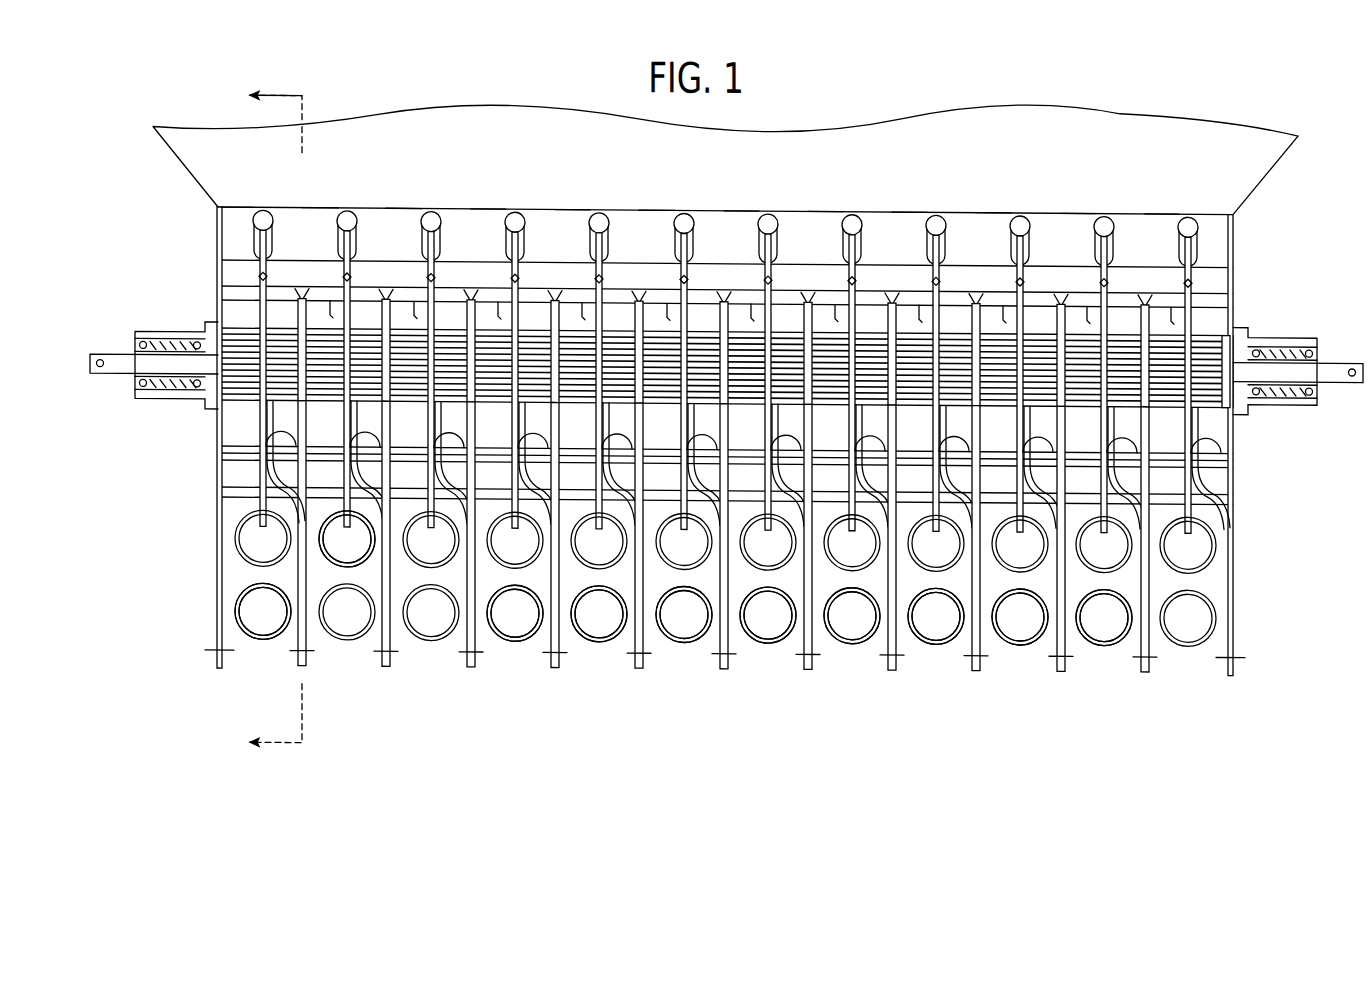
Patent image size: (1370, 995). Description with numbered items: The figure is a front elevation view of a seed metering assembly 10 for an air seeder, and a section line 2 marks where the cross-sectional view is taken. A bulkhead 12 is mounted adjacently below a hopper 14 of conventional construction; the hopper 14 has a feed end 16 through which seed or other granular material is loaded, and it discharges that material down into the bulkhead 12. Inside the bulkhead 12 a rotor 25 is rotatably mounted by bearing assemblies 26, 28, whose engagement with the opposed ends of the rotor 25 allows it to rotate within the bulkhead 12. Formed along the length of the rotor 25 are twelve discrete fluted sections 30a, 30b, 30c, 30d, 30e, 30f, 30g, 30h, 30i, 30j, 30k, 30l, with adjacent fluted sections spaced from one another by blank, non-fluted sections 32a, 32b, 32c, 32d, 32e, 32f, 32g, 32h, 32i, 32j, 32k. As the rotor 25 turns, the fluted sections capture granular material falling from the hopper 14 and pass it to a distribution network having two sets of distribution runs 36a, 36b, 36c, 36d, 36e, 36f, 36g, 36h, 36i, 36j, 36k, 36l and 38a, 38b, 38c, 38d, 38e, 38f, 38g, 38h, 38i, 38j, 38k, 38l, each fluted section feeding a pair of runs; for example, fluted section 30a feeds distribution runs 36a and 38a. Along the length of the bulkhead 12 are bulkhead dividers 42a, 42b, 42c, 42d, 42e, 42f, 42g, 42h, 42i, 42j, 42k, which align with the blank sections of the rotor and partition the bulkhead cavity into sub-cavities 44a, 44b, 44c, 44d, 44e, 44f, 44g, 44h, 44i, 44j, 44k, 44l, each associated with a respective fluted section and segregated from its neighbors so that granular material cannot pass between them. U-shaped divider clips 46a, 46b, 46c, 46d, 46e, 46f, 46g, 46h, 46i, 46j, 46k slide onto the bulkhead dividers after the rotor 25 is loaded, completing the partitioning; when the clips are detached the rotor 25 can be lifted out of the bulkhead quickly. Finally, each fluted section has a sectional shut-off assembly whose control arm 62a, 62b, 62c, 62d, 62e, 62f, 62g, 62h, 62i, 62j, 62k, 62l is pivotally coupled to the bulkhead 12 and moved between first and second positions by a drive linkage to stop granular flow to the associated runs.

The section line 2- 2 is at (264, 420).
The seed metering assembly 10 is at (128, 604).
The bulkhead 12 is at (710, 440).
The hopper 14 is at (1268, 170).
The feed end 16 is at (977, 91).
The rotor 25 is at (1226, 346).
The bearing assembly 26 is at (130, 324).
The bearing assembly 28 is at (1292, 408).
The fluted section 30a is at (260, 406).
The fluted section 30b is at (343, 406).
The fluted section 30c is at (380, 389).
The fluted section 30d is at (515, 390).
The fluted section 30e is at (599, 391).
The fluted section 30f is at (684, 391).
The fluted section 30g is at (768, 392).
The fluted section 30h is at (852, 393).
The fluted section 30i is at (936, 393).
The fluted section 30j is at (1020, 394).
The fluted section 30k is at (1104, 394).
The fluted section 30l is at (1198, 458).
The blank section 32a is at (303, 328).
The blank section 32b is at (386, 298).
The blank section 32c is at (471, 298).
The blank section 32d is at (555, 298).
The blank section 32e is at (639, 298).
The blank section 32f is at (724, 298).
The blank section 32g is at (808, 298).
The blank section 32h is at (892, 298).
The blank section 32i is at (976, 298).
The blank section 32j is at (1061, 298).
The blank section 32k is at (1150, 322).
The distribution run 36a is at (216, 578).
The distribution run 36b is at (382, 652).
The distribution run 36c is at (466, 652).
The distribution run 36d is at (550, 652).
The distribution run 36e is at (634, 652).
The distribution run 36f is at (719, 652).
The distribution run 36g is at (803, 652).
The distribution run 36h is at (887, 652).
The distribution run 36i is at (971, 652).
The distribution run 36j is at (1056, 652).
The distribution run 36k is at (1150, 657).
The distribution run 36l is at (1233, 575).
The distribution run 38a is at (240, 632).
The distribution run 38b is at (340, 640).
The distribution run 38c is at (424, 640).
The distribution run 38d is at (515, 640).
The distribution run 38e is at (597, 640).
The distribution run 38f is at (682, 640).
The distribution run 38g is at (765, 640).
The distribution run 38h is at (850, 640).
The distribution run 38i is at (934, 640).
The distribution run 38j is at (1017, 640).
The distribution run 38k is at (1104, 640).
The distribution run 38l is at (1212, 626).
The bulkhead divider 42a is at (236, 538).
The bulkhead divider 42b is at (283, 633).
The bulkhead divider 42c is at (431, 539).
The bulkhead divider 42d is at (599, 614).
The bulkhead divider 42e is at (684, 614).
The bulkhead divider 42f is at (768, 615).
The bulkhead divider 42g is at (852, 616).
The bulkhead divider 42h is at (936, 616).
The bulkhead divider 42i is at (1020, 617).
The bulkhead divider 42j is at (1104, 617).
The bulkhead divider 42k is at (1194, 497).
The sub-cavity 44a is at (230, 318).
The sub-cavity 44b is at (312, 207).
The sub-cavity 44c is at (418, 207).
The sub-cavity 44d is at (525, 207).
The sub-cavity 44e is at (608, 207).
The sub-cavity 44f is at (692, 207).
The sub-cavity 44g is at (760, 207).
The sub-cavity 44h is at (860, 207).
The sub-cavity 44i is at (944, 207).
The sub-cavity 44j is at (1028, 207).
The sub-cavity 44k is at (1150, 207).
The sub-cavity 44l is at (1170, 315).
The U-shaped divider clip 46a is at (330, 308).
The U-shaped divider clip 46b is at (414, 308).
The U-shaped divider clip 46c is at (500, 310).
The U-shaped divider clip 46d is at (584, 308).
The U-shaped divider clip 46e is at (668, 308).
The U-shaped divider clip 46f is at (752, 308).
The U-shaped divider clip 46g is at (836, 308).
The U-shaped divider clip 46h is at (920, 308).
The U-shaped divider clip 46i is at (1004, 308).
The U-shaped divider clip 46j is at (1088, 308).
The U-shaped divider clip 46k is at (1162, 300).
The control arm 62a is at (300, 398).
The control arm 62b is at (320, 420).
The control arm 62c is at (437, 430).
The control arm 62d is at (522, 522).
The control arm 62e is at (622, 430).
The control arm 62f is at (705, 430).
The control arm 62g is at (790, 430).
The control arm 62h is at (875, 430).
The control arm 62i is at (958, 430).
The control arm 62j is at (1045, 430).
The control arm 62k is at (1200, 528).
The control arm 62l is at (1194, 426).